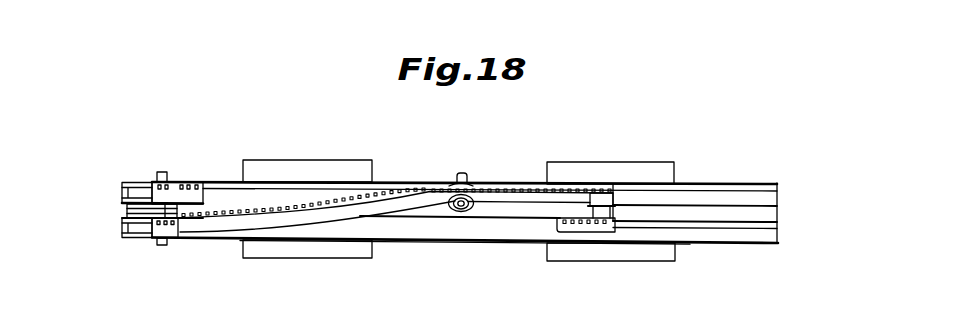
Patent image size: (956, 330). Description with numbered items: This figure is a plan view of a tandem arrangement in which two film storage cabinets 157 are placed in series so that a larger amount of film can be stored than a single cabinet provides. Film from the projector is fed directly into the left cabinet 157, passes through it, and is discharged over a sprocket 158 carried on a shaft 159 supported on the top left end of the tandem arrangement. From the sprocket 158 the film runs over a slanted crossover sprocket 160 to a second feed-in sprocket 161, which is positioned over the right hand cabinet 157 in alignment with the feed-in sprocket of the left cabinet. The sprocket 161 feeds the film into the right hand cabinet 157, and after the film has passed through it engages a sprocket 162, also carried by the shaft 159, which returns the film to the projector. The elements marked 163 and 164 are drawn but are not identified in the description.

The cabinet 157 is at (768, 231).
The sprocket 158 is at (164, 228).
The shaft 159 is at (160, 173).
The slanted crossover sprocket 160 is at (462, 173).
The second feed-in sprocket 161 is at (620, 193).
The sprocket 162 is at (176, 192).
The upper rail 163 is at (770, 193).
The lower toothed slide 164 is at (592, 228).